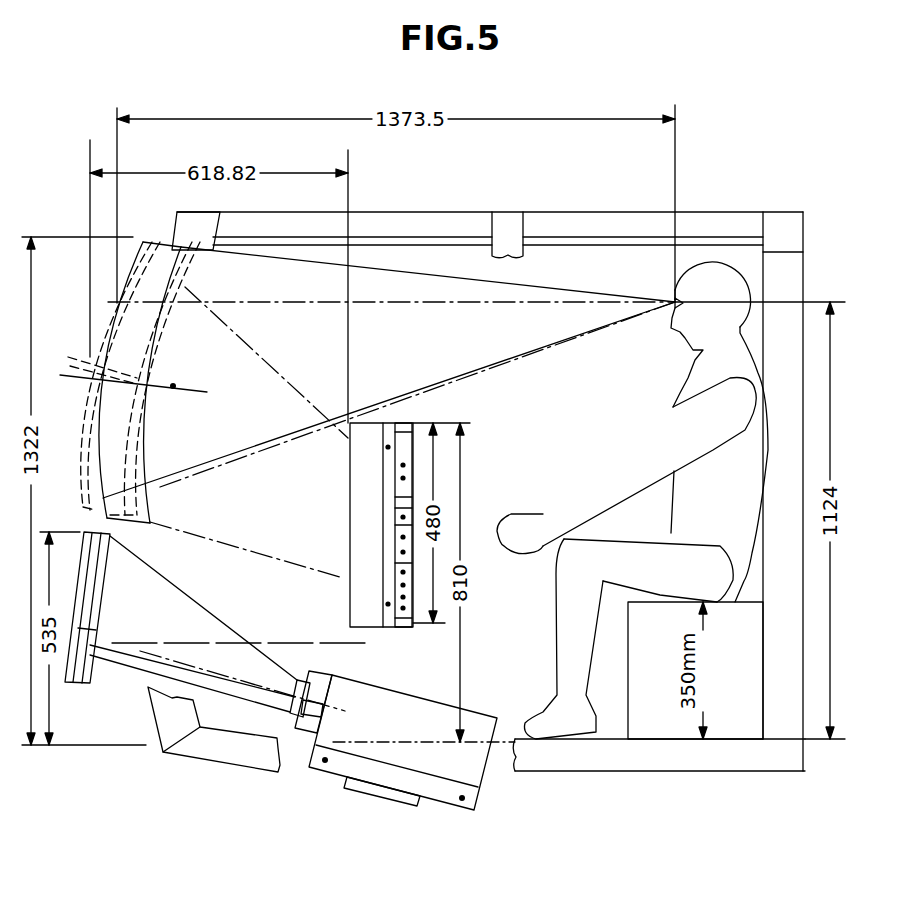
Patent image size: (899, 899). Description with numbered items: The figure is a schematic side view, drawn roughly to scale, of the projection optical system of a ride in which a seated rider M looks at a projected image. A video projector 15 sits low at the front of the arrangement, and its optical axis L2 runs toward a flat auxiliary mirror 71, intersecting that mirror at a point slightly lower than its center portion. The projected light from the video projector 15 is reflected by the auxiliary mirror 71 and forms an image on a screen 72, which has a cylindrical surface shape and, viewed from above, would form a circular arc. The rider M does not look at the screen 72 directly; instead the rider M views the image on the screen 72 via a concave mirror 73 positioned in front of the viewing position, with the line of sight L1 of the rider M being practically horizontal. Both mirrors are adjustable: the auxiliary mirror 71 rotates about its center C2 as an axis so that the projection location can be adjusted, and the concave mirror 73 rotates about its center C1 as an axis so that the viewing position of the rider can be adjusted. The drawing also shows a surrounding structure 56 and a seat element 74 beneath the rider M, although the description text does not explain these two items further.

The frame 56 is at (557, 210).
The concave mirror 73 is at (147, 432).
The screen 72 is at (350, 523).
The auxiliary mirror 71 is at (90, 676).
The seat 74 is at (659, 740).
The video projector 15 is at (485, 780).
The center of the concave mirror C1 is at (173, 386).
The center of the auxiliary mirror C2 is at (93, 599).
The line of sight L1 is at (317, 305).
The optical axis L2 is at (170, 663).
The rider M is at (678, 404).